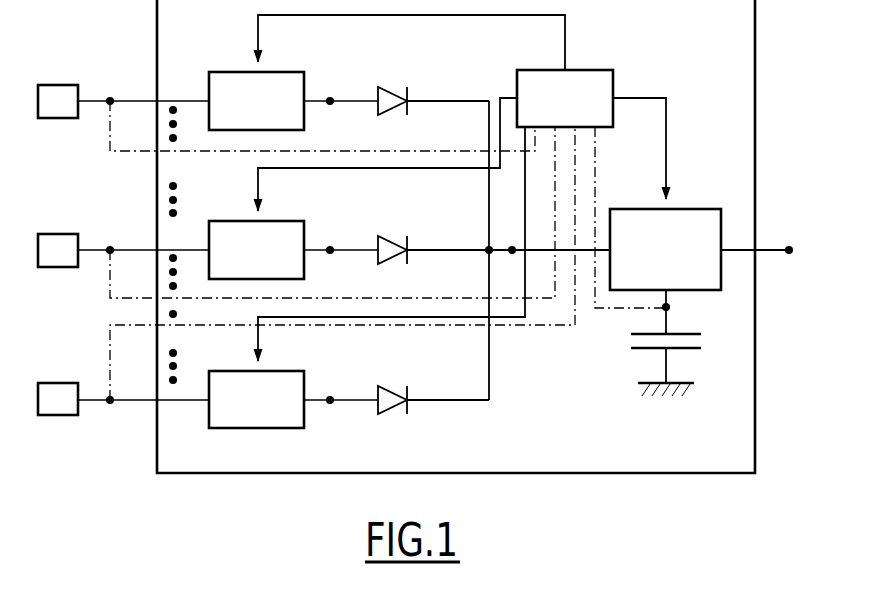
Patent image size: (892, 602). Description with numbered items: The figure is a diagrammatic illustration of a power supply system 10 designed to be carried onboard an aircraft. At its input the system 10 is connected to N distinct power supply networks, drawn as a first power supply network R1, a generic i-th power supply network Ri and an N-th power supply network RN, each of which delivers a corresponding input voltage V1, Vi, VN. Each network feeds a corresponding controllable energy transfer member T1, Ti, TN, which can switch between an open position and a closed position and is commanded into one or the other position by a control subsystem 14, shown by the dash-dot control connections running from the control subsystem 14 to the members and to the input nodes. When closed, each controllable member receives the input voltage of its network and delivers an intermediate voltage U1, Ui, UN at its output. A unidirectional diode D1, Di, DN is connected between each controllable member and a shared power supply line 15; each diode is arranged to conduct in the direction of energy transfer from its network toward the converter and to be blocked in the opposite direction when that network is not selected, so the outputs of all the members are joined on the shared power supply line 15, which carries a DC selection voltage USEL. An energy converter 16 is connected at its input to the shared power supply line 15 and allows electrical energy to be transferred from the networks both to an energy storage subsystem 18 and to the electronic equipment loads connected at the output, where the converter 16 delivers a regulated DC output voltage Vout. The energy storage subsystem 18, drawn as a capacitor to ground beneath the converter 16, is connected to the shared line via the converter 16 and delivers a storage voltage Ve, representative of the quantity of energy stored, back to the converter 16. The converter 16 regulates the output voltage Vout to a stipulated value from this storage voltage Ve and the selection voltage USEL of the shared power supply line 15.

The power supply system 10 is at (683, 480).
The control subsystem 14 is at (627, 75).
The shared power supply line 15 is at (543, 262).
The energy converter 16 is at (696, 197).
The energy storage subsystem 18 is at (633, 357).
The first power supply network R1 is at (55, 80).
The i-th power supply network Ri is at (55, 230).
The N-th power supply network RN is at (55, 379).
The first controllable energy transfer member T1 is at (236, 66).
The i-th controllable energy transfer member Ti is at (249, 216).
The N-th controllable energy transfer member TN is at (249, 434).
The first unidirectional diode D1 is at (390, 86).
The i-th unidirectional diode Di is at (386, 229).
The N-th unidirectional diode DN is at (385, 384).
The first input voltage V1 is at (143, 87).
The i-th input voltage Vi is at (143, 236).
The N-th input voltage VN is at (143, 420).
The first intermediate voltage U1 is at (341, 87).
The i-th intermediate voltage Ui is at (341, 236).
The N-th intermediate voltage UN is at (341, 419).
The selection voltage USEL is at (547, 250).
The output voltage Vout is at (779, 251).
The storage voltage Ve is at (680, 312).